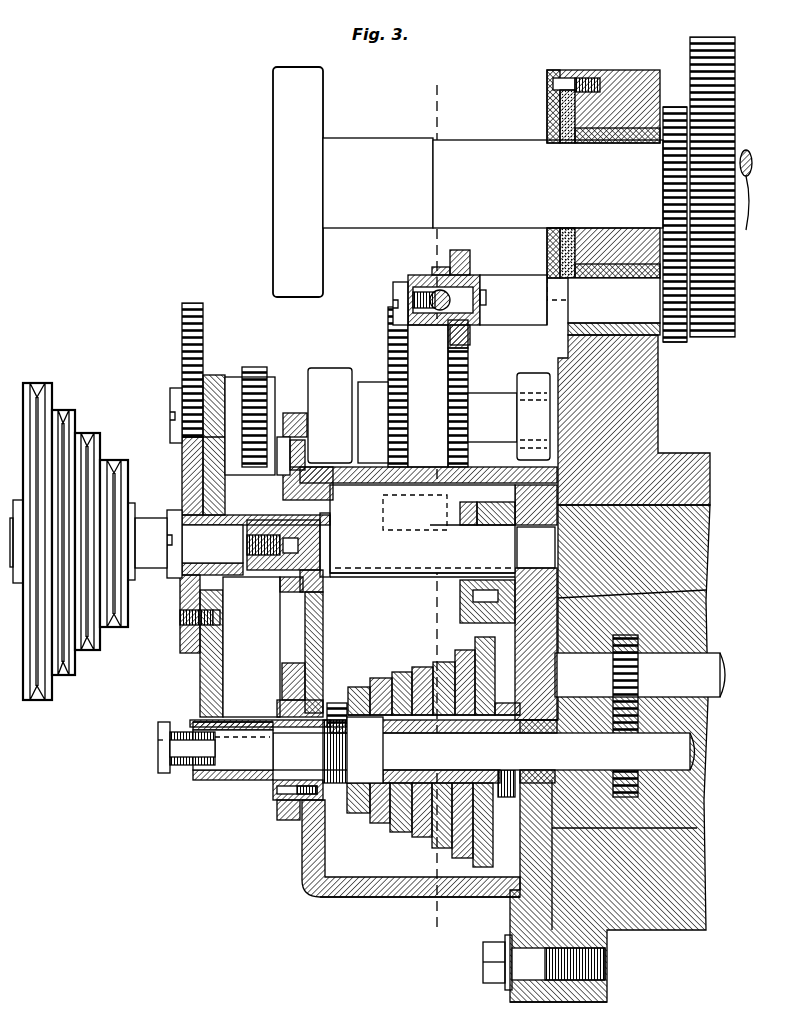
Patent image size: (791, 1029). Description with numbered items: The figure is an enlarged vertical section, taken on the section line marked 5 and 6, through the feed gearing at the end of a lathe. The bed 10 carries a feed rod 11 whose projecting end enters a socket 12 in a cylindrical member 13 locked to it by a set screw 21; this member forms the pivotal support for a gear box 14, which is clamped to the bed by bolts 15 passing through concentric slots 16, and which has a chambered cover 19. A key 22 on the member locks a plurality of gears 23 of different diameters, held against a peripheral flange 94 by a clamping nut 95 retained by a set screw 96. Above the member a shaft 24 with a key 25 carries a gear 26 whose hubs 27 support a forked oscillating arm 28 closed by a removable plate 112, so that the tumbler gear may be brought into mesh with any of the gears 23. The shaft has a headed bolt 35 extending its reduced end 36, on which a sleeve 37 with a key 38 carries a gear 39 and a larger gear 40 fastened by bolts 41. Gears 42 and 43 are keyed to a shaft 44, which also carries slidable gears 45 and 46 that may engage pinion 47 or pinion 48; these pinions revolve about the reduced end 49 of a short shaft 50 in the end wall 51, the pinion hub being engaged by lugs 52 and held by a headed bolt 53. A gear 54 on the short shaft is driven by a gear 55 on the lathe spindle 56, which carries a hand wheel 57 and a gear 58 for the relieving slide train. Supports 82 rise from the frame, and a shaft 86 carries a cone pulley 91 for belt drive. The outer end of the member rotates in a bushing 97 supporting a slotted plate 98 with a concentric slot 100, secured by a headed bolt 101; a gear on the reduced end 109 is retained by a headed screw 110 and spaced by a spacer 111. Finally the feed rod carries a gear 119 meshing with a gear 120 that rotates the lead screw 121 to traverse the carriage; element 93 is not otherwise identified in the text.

The section line 5 is at (433, 497).
The section line 6 is at (425, 944).
The bed 10 is at (697, 910).
The feed rod 11 is at (692, 745).
The socket 12 is at (415, 835).
The cylindrical member 13 is at (370, 825).
The gear box 14 is at (302, 868).
The bolts 15 is at (533, 1000).
The concentric slots 16 is at (483, 960).
The chambered cover 19 is at (338, 898).
The set screw 21 is at (697, 828).
The key 22 is at (497, 676).
The gears 23 is at (418, 668).
The shaft 24 is at (372, 573).
The key 25 is at (415, 576).
The gear 26 is at (460, 502).
The hubs 27 is at (463, 572).
The forked oscillating arm 28 is at (706, 593).
The headed bolt 35 is at (241, 565).
The reduced end 36 is at (250, 520).
The sleeve 37 is at (182, 588).
The key 38 is at (230, 512).
The gear 39 is at (182, 452).
The larger gear 40 is at (223, 655).
The bolts 41 is at (220, 624).
The gear 42 is at (190, 306).
The gear 43 is at (248, 365).
The shaft 44 is at (318, 368).
The gear 45 is at (388, 335).
The smaller gear 46 is at (470, 378).
The pinion 47 is at (432, 272).
The pinion 48 is at (460, 252).
The reduced end 49 is at (462, 292).
The short shaft 50 is at (513, 314).
The end wall 51 is at (648, 378).
The lugs 52 is at (485, 295).
The headed bolt 53 is at (393, 288).
The gear 54 is at (675, 342).
The gear 55 is at (675, 103).
The lathe spindle 56 is at (485, 148).
The hand wheel 57 is at (323, 97).
The gear 58 is at (715, 337).
The supports 82 is at (610, 70).
The shaft 86 is at (152, 515).
The cone pulley 91 is at (45, 705).
The bushing 93 is at (282, 672).
The peripheral flange 94 is at (434, 700).
The clamping nut 95 is at (327, 790).
The set screw 96 is at (335, 703).
The bushing 97 is at (273, 795).
The plate 98 is at (295, 412).
The concentric slot 100 is at (310, 440).
The headed bolt 101 is at (285, 458).
The reduced end 109 is at (225, 760).
The headed screw 110 is at (158, 760).
The spacer 111 is at (246, 722).
The removable plate 112 is at (460, 596).
The gear 119 is at (613, 742).
The gear 120 is at (637, 675).
The lead screw 121 is at (725, 656).